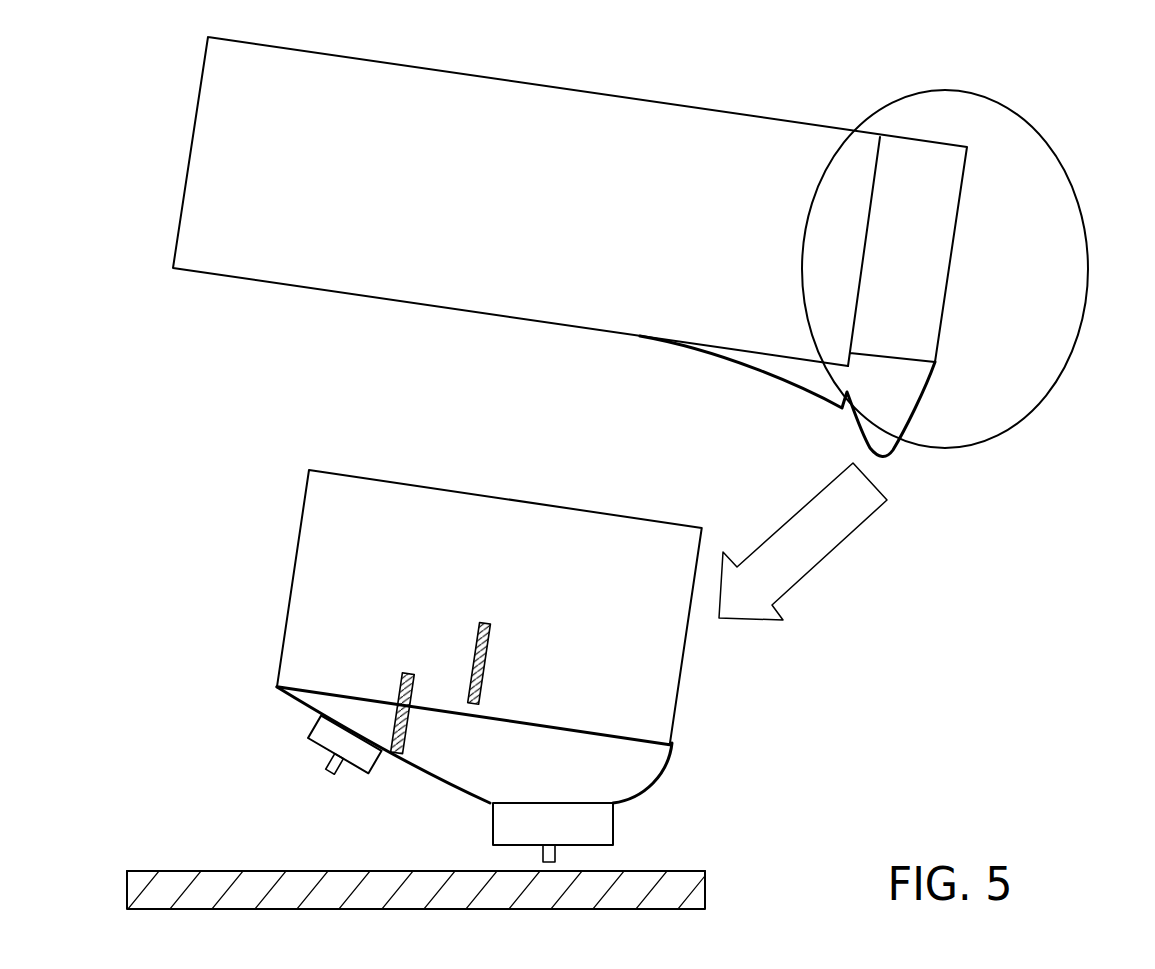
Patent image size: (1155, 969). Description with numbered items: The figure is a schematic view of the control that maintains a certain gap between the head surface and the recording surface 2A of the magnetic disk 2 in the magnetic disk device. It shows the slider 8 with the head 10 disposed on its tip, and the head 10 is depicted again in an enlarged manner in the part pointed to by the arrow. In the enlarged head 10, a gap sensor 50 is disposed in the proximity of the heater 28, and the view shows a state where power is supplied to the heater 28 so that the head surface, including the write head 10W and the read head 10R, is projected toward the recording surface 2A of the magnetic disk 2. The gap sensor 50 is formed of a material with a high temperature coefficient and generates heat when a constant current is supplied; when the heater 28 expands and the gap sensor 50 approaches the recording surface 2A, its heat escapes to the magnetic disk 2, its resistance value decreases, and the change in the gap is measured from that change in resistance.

The magnetic disk 2 is at (706, 888).
The recording surface 2A is at (440, 877).
The slider 8 is at (417, 304).
The head 10 is at (1067, 160).
The read head 10R is at (332, 776).
The write head 10W is at (615, 823).
The heater 28 is at (490, 622).
The gap sensor 50 is at (400, 687).